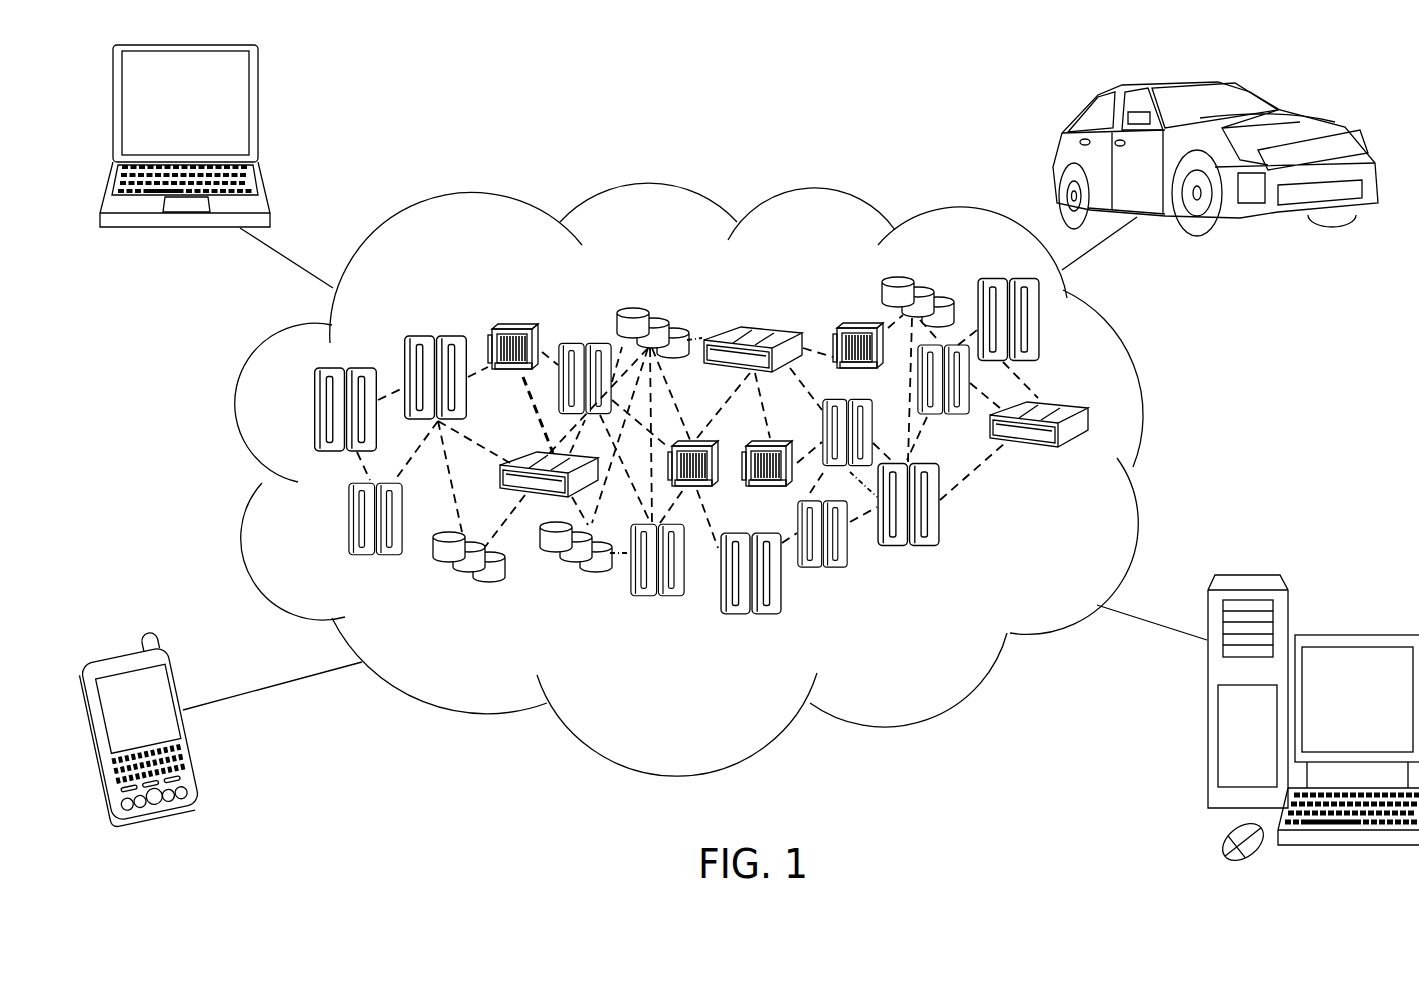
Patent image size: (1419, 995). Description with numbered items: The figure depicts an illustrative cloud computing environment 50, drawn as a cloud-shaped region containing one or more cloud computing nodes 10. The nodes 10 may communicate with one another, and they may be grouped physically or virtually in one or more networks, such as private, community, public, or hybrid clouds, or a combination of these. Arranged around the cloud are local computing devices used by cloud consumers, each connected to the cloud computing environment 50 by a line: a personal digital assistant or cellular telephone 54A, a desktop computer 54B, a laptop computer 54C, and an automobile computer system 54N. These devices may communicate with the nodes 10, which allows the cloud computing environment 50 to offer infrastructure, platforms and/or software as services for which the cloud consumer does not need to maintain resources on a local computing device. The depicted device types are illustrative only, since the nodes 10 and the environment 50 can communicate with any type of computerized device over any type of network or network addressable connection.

The cloud computing node 10 is at (1113, 478).
The cloud computing environment 50 is at (1141, 383).
The personal digital assistant (PDA) or cellular telephone 54A is at (193, 750).
The desktop computer 54B is at (1357, 635).
The laptop computer 54C is at (258, 103).
The automobile computer system 54N is at (1053, 152).